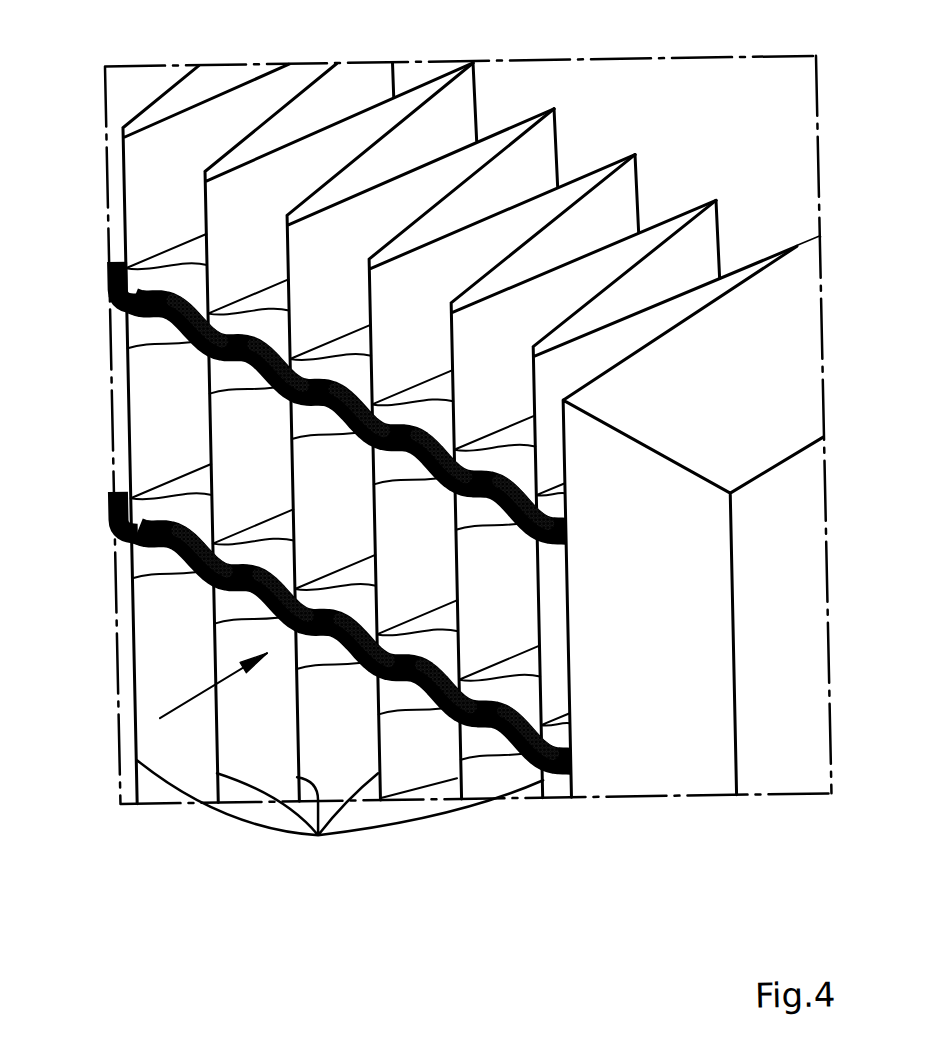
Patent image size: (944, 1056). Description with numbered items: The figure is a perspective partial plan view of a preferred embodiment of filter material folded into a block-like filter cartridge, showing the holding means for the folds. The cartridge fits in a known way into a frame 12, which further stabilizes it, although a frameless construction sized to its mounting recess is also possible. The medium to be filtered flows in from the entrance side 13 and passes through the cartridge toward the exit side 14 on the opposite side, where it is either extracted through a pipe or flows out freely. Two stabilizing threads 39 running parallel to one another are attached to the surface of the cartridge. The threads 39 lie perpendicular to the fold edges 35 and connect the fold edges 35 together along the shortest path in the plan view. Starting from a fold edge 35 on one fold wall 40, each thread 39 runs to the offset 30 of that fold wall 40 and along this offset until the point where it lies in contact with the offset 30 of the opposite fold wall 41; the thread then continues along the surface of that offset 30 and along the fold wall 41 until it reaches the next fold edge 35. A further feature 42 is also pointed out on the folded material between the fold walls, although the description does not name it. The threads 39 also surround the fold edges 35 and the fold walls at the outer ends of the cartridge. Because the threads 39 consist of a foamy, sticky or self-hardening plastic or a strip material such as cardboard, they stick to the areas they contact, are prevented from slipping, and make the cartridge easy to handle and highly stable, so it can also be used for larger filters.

The frame 12 is at (796, 746).
The entrance side 13 is at (200, 689).
The exit side 14 is at (454, 402).
The offset 30 is at (184, 283).
The fold edges 35 is at (341, 815).
The stabilizing threads 39 is at (106, 263).
The fold wall 40 is at (226, 105).
The fold wall 41 is at (286, 103).
The slot in pleat 42 is at (264, 346).